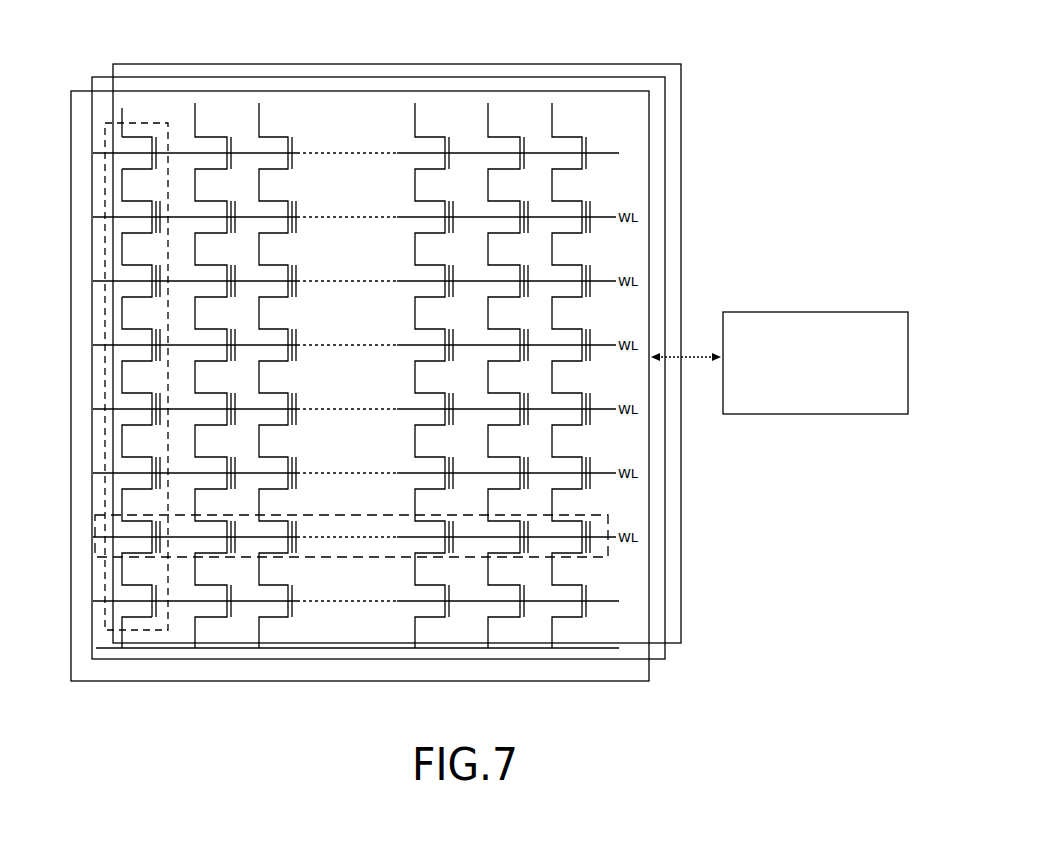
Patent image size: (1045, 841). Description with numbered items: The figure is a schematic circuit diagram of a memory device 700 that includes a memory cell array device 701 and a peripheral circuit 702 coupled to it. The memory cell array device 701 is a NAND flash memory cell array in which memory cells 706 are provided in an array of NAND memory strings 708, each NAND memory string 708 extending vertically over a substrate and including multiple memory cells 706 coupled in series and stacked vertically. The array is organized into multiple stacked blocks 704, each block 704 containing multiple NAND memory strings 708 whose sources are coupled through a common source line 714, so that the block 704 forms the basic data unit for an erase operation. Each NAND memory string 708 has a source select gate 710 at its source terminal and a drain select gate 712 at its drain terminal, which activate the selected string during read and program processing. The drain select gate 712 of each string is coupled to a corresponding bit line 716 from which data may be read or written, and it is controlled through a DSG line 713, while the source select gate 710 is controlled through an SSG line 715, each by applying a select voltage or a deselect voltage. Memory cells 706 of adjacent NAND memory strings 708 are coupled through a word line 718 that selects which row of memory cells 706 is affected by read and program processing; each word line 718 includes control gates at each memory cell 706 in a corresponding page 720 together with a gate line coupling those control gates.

The memory device 700 is at (152, 47).
The memory cell array device 701 is at (645, 53).
The peripheral circuit 702 is at (883, 312).
The block 704 is at (552, 91).
The memory cell 706 is at (147, 255).
The NAND memory string 708 is at (105, 193).
The source select gate 710 is at (136, 622).
The drain select gate 712 is at (136, 134).
The DSG line 713 is at (587, 152).
The source line 714 is at (212, 648).
The SSG line 715 is at (583, 600).
The bit line 716 is at (122, 108).
The word line 718 is at (305, 471).
The page 720 is at (295, 515).